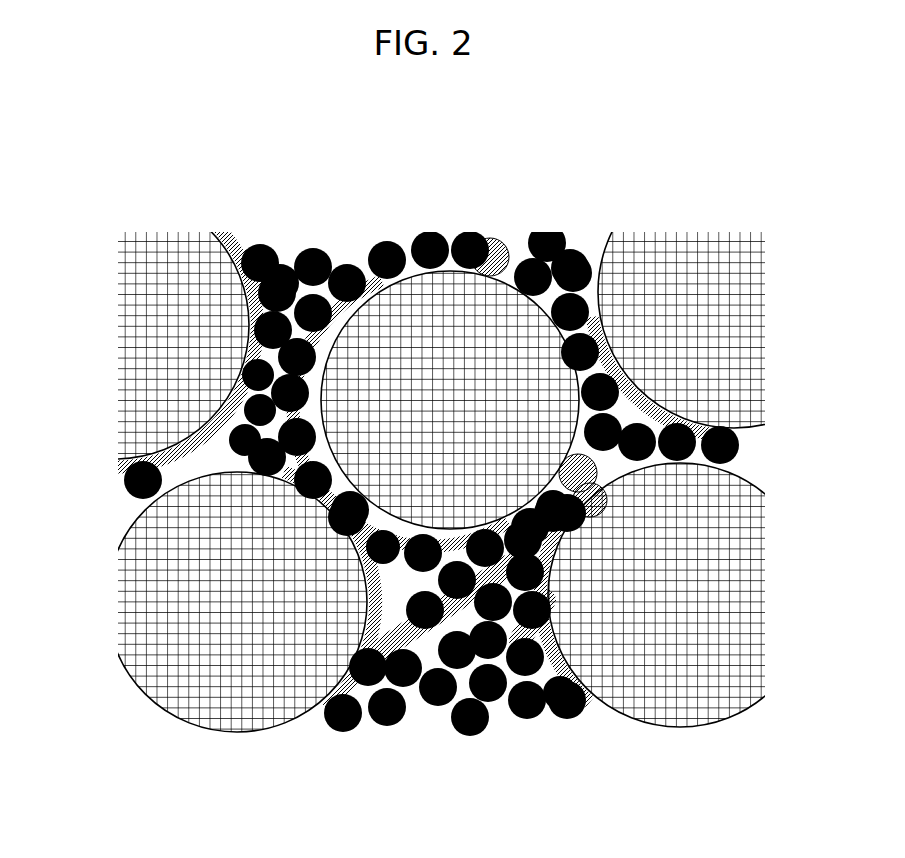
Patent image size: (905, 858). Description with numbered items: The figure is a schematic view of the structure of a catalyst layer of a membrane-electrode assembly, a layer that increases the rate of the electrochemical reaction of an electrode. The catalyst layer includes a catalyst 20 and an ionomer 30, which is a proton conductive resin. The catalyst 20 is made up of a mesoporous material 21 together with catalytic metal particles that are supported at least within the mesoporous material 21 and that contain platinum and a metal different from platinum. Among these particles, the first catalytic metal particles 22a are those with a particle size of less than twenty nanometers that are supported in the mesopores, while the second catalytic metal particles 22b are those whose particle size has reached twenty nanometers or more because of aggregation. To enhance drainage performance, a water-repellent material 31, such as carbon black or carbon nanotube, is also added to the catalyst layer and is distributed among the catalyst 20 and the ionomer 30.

The catalyst 20 is at (337, 153).
The mesoporous material 21 is at (130, 236).
The first catalytic metal particles 22a is at (200, 236).
The second catalytic metal particles 22b is at (492, 240).
The ionomer 30 is at (323, 704).
The water-repellent material 31 is at (470, 738).